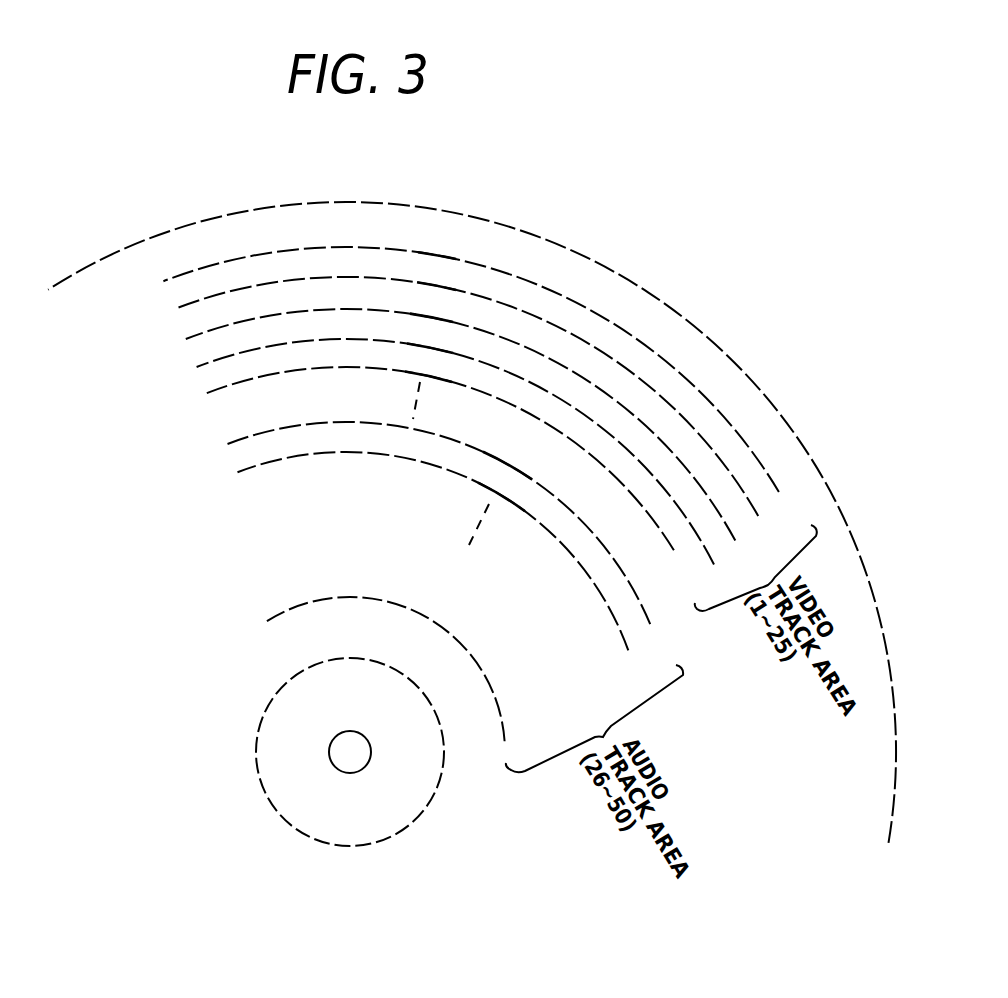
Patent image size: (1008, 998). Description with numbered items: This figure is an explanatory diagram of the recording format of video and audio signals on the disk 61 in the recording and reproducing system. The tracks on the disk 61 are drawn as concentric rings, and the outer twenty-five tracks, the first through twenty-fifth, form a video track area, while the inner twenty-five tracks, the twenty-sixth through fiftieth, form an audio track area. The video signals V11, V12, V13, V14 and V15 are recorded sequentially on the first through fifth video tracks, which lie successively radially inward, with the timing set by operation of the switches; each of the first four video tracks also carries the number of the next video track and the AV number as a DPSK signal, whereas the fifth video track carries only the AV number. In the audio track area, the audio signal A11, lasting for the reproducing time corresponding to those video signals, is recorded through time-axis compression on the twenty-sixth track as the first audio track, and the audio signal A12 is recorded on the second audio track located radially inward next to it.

The disk 61 is at (741, 368).
The video signal V11 is at (471, 360).
The video signal V12 is at (466, 388).
The video signal V13 is at (461, 416).
The video signal V14 is at (455, 443).
The video signal V15 is at (440, 450).
The audio signal A11 is at (439, 523).
The audio signal A12 is at (433, 551).